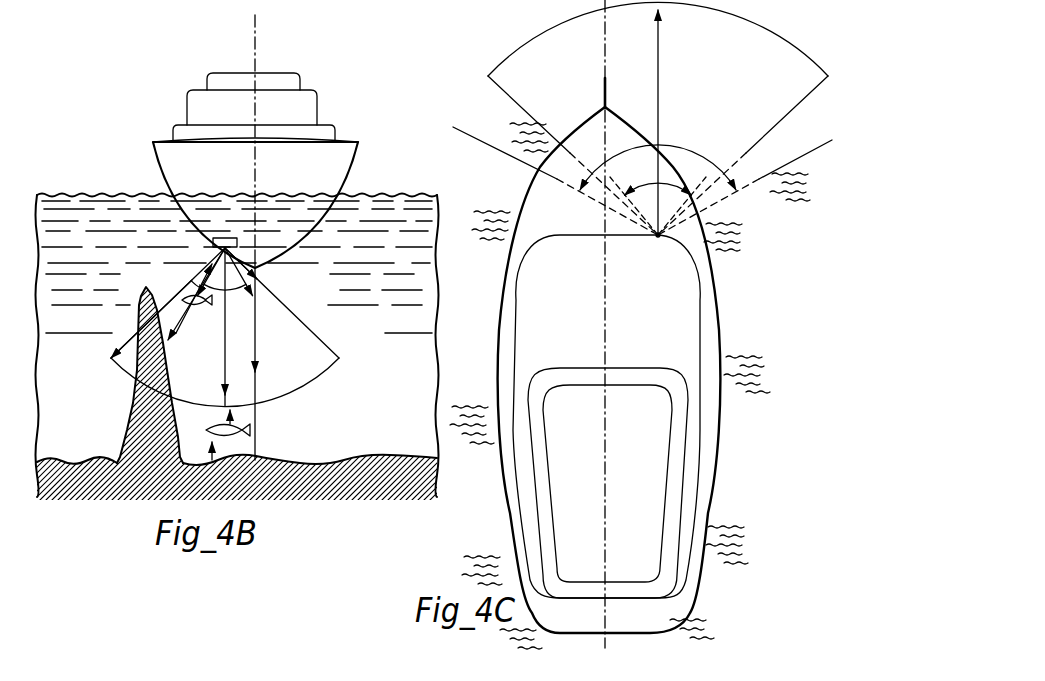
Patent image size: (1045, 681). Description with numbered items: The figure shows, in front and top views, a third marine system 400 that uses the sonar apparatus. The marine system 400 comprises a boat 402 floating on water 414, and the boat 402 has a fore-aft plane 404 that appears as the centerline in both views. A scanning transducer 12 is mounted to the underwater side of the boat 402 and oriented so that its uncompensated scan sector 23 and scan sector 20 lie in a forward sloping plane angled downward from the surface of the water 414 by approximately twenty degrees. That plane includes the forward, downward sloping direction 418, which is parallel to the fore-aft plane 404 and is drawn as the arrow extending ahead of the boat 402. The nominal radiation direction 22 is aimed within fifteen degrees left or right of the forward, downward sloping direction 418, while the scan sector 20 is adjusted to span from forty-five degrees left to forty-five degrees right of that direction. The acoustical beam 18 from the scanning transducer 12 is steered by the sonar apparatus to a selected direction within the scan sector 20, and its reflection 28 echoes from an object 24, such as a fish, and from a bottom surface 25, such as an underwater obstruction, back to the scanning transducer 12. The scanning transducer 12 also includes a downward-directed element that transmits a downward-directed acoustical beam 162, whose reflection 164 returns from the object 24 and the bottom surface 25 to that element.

In FIG. 4B, the scanning transducer 12 is at (222, 237).
In FIG. 4C, the scanning transducer 12 is at (658, 238).
In FIG. 4B, the acoustical beam 18 is at (213, 256).
In FIG. 4B, the scan sector 20 is at (270, 283).
In FIG. 4C, the scan sector 20 is at (640, 188).
In FIG. 4B, the nominal radiation direction 22 is at (228, 345).
In FIG. 4B, the uncompensated scan sector 23 is at (269, 355).
In FIG. 4C, the uncompensated scan sector 23 is at (696, 166).
In FIG. 4B, the object 24 is at (228, 419).
In FIG. 4B, the bottom surface 25 is at (128, 424).
In FIG. 4B, the reflection 28 is at (186, 280).
In FIG. 4B, the downward-directed acoustical beam 162 is at (225, 327).
In FIG. 4B, the reflection 164 is at (250, 432).
In FIG. 4B, the marine system 400 is at (150, 186).
In FIG. 4C, the marine system 400 is at (483, 128).
In FIG. 4B, the boat 402 is at (318, 100).
In FIG. 4C, the boat 402 is at (594, 445).
In FIG. 4B, the fore-aft plane 404 is at (257, 42).
In FIG. 4C, the fore-aft plane 404 is at (603, 306).
In FIG. 4B, the water 414 is at (396, 335).
In FIG. 4C, the water 414 is at (772, 321).
In FIG. 4B, the forward, downward sloping direction 418 is at (226, 356).
In FIG. 4C, the forward, downward sloping direction 418 is at (654, 72).